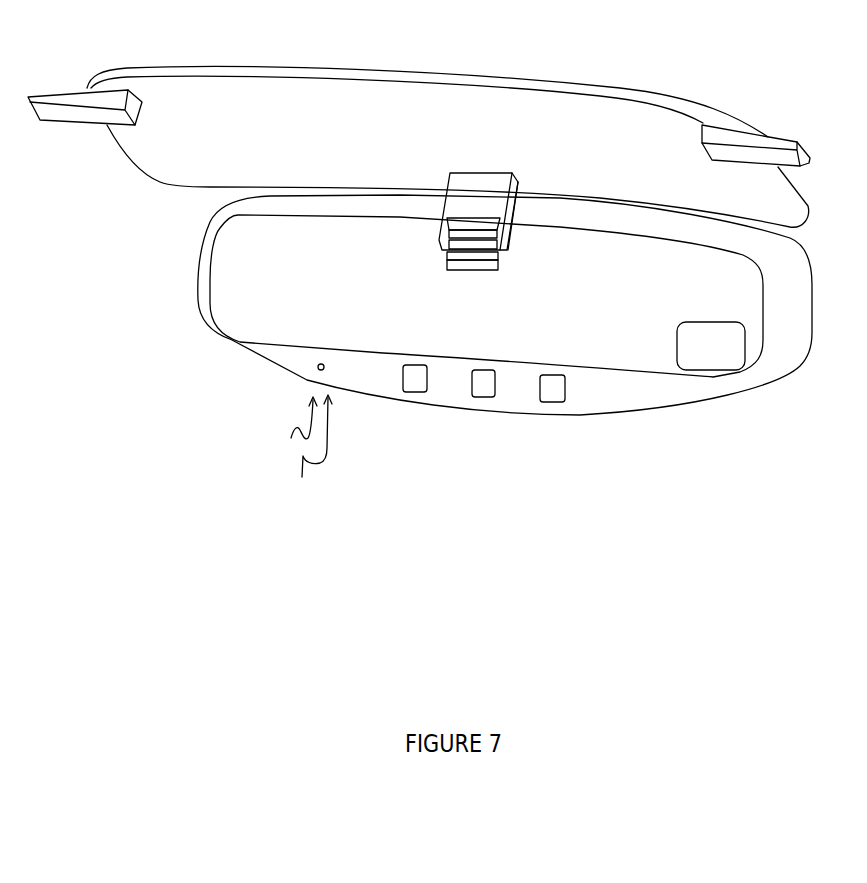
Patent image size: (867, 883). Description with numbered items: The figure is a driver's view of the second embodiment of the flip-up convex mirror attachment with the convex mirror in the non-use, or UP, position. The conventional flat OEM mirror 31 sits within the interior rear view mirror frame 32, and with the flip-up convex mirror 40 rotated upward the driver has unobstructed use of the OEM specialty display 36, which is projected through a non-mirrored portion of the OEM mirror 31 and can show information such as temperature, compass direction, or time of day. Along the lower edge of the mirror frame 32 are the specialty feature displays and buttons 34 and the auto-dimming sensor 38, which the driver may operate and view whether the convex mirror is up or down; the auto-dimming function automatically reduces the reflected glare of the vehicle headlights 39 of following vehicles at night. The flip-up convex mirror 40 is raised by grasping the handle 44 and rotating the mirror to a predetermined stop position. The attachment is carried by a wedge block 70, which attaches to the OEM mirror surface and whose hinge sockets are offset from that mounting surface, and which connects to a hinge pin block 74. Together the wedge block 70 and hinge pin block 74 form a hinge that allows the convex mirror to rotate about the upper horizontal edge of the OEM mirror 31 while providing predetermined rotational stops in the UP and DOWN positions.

The OEM mirror 31 is at (288, 278).
The interior rear view mirror frame 32 is at (607, 393).
The specialty feature displays and buttons 34 is at (550, 403).
The OEM specialty display 36 is at (733, 362).
The auto-dimming sensor 38 is at (318, 370).
The vehicle headlights 39 is at (288, 453).
The flip-up convex mirror 40 is at (202, 138).
The handle 44 is at (712, 135).
The wedge block 70 is at (472, 263).
The hinge pin block 74 is at (463, 197).